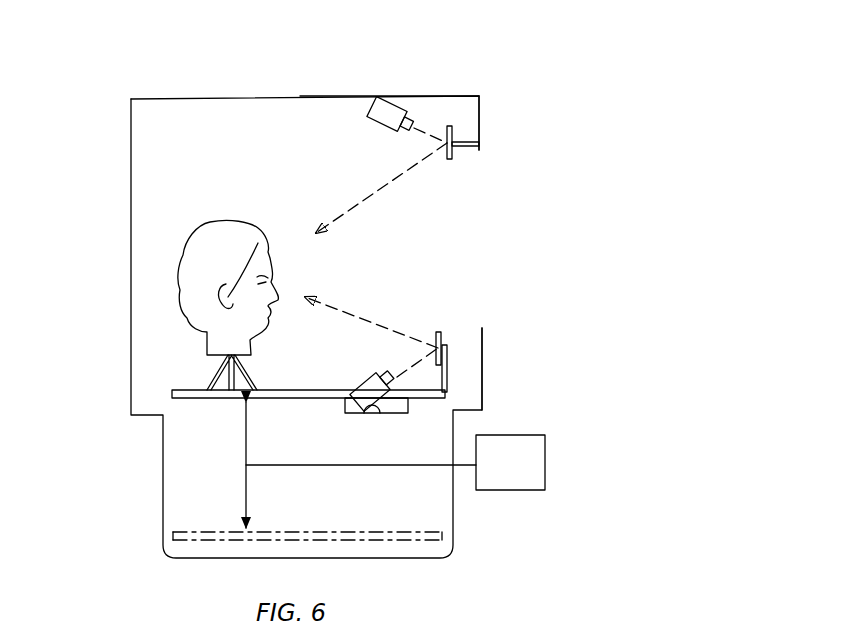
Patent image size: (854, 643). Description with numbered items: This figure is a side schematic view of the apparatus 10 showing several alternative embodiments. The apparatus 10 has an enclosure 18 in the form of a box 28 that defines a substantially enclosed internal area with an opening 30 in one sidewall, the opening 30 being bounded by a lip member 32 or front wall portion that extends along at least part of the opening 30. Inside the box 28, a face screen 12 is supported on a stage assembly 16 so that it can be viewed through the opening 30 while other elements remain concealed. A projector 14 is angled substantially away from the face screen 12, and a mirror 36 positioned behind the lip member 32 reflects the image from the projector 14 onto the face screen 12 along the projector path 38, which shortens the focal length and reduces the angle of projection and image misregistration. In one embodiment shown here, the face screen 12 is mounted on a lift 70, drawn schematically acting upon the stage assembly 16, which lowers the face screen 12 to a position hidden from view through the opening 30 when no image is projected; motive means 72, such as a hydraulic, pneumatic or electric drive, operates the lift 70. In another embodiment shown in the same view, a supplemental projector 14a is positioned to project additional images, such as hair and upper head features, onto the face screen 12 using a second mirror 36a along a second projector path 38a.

The apparatus 10 is at (147, 82).
The face screen 12 is at (316, 268).
The projector 14 is at (423, 412).
The supplemental projector 14a is at (358, 112).
The stage assembly 16 is at (188, 372).
The enclosure 18 is at (449, 95).
The box 28 is at (131, 148).
The opening 30 is at (415, 246).
The lip member 32 is at (479, 145).
The mirror 36 is at (440, 331).
The mirror 36a is at (458, 126).
The projector path 38 is at (390, 328).
The projector path 38a is at (380, 192).
The lift 70 is at (203, 470).
The motive means 72 is at (526, 475).